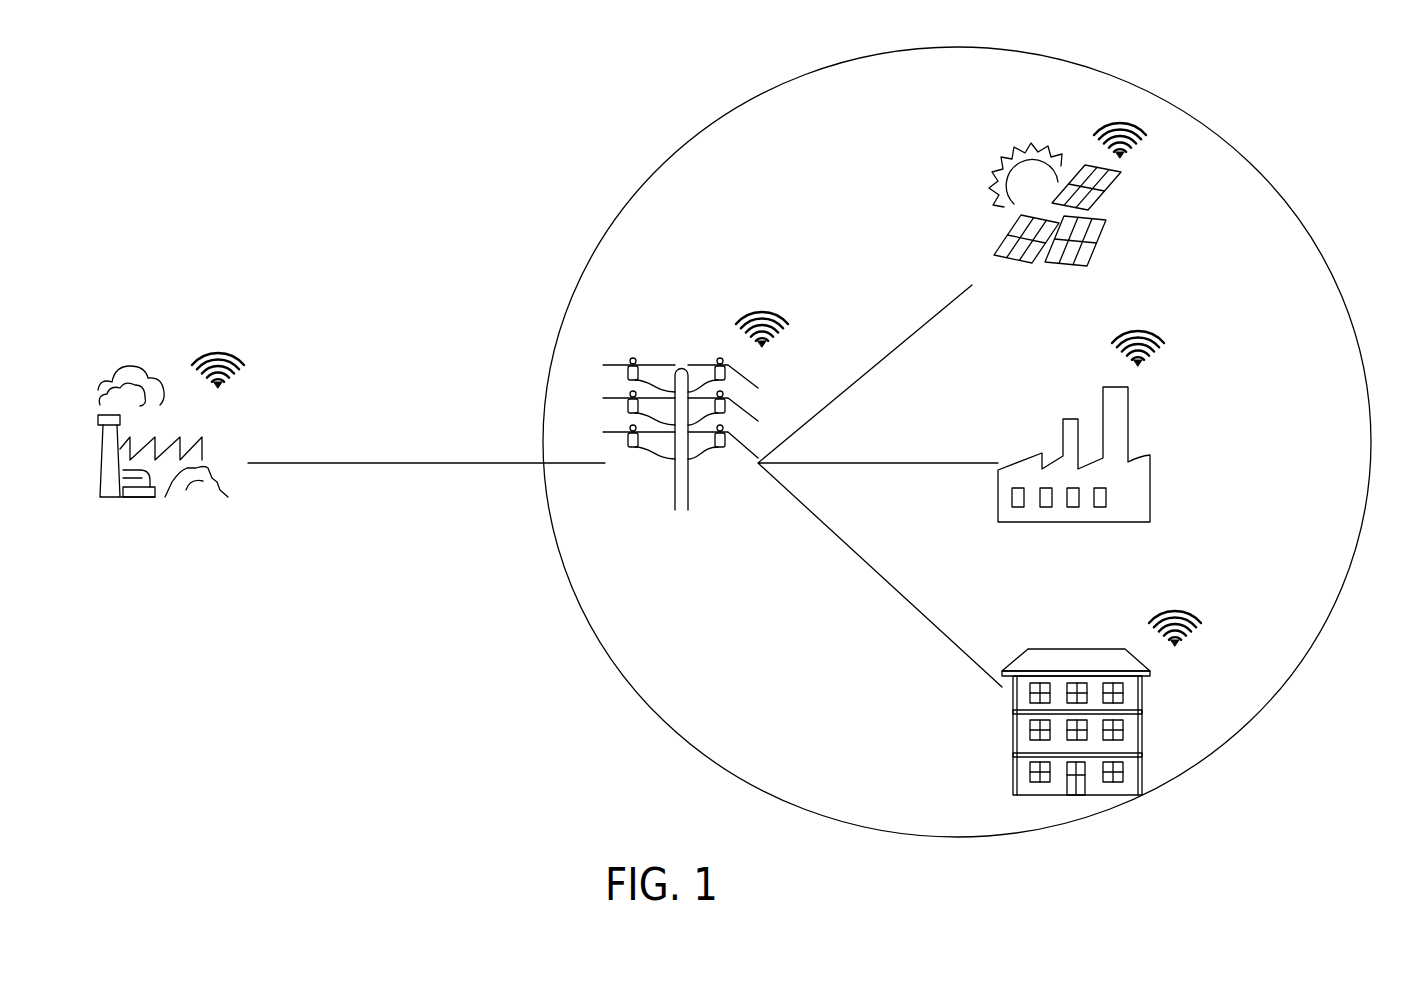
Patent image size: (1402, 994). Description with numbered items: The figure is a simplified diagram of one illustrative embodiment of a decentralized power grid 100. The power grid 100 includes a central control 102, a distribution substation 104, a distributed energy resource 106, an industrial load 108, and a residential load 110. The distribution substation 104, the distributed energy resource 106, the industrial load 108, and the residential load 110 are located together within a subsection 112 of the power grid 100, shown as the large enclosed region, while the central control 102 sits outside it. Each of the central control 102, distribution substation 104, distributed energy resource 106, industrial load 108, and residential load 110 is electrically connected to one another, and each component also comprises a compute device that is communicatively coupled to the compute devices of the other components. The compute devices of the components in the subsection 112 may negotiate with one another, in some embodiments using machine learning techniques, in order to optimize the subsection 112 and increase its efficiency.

The decentralized power grid 100 is at (225, 128).
The central control 102 is at (167, 355).
The distribution substation 104 is at (710, 328).
The distributed energy resource 106 is at (1147, 158).
The industrial load 108 is at (1163, 413).
The residential load 110 is at (1210, 572).
The subsection 112 is at (620, 168).